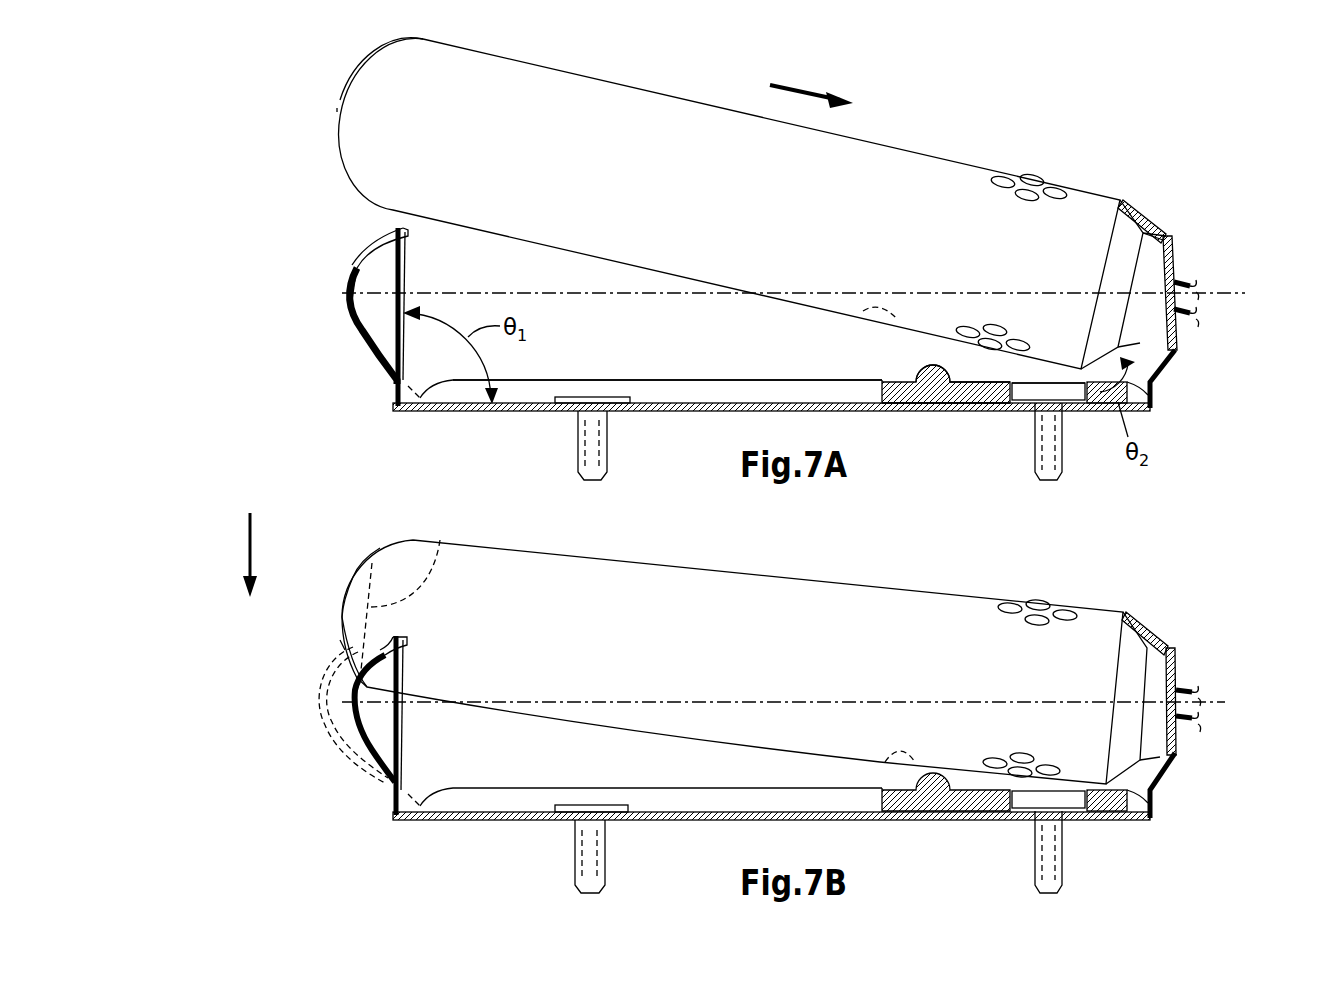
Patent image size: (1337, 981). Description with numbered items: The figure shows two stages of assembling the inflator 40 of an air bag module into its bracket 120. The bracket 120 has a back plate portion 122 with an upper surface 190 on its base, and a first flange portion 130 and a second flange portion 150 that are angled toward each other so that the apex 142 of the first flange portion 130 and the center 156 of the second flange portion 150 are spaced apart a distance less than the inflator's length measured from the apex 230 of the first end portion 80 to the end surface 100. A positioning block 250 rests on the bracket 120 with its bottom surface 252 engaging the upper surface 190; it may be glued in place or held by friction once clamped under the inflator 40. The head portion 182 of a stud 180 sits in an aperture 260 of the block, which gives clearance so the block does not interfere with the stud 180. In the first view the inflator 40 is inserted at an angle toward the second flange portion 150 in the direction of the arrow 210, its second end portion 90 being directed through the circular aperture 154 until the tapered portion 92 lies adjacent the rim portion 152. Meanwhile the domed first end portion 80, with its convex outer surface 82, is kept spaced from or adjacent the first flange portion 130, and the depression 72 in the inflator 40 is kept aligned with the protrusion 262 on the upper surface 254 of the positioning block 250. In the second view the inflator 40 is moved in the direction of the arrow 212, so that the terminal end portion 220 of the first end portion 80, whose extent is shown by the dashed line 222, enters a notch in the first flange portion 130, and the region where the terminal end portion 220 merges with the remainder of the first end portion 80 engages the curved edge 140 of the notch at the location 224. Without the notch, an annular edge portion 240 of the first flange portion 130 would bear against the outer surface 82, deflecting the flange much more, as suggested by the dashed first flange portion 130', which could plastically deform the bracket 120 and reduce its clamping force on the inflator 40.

In FIG. 7A, the inflator 40 is at (882, 132).
In FIG. 7B, the inflator 40 is at (826, 572).
In FIG. 7A, the depression 72 is at (880, 322).
In FIG. 7A, the first end portion 80 is at (373, 117).
In FIG. 7B, the first end portion 80 is at (390, 570).
In FIG. 7B, the domed outer surface 82 is at (335, 588).
In FIG. 7A, the second end portion 90 is at (1093, 273).
In FIG. 7B, the second end portion 90 is at (1108, 658).
In FIG. 7A, the tapered portion 92 is at (1131, 207).
In FIG. 7B, the tapered portion 92 is at (1133, 618).
In FIG. 7A, the end surface 100 is at (1155, 248).
In FIG. 7A, the bracket 120 is at (771, 355).
In FIG. 7B, the bracket 120 is at (724, 832).
In FIG. 7A, the back plate portion 122 is at (857, 410).
In FIG. 7A, the first flange portion 130 is at (364, 306).
In FIG. 7B, the first flange portion 130 is at (339, 709).
In FIG. 7B, the first flange portion in deflected position 130' is at (317, 715).
In FIG. 7B, the curved edge 140 is at (343, 683).
In FIG. 7A, the apex 142 is at (353, 295).
In FIG. 7A, the second flange portion 150 is at (1150, 218).
In FIG. 7B, the second flange portion 150 is at (1152, 628).
In FIG. 7A, the rim portion 152 is at (1157, 228).
In FIG. 7A, the circular aperture 154 is at (1195, 335).
In FIG. 7A, the center 156 is at (1180, 297).
In FIG. 7A, the stud 180 is at (1050, 455).
In FIG. 7A, the head portion 182 is at (1058, 390).
In FIG. 7A, the upper surface 190 is at (758, 392).
In FIG. 7A, the arrow indicating insertion direction 210 is at (793, 83).
In FIG. 7B, the arrow indicating movement direction 212 is at (248, 540).
In FIG. 7B, the terminal end portion 220 is at (355, 593).
In FIG. 7B, the dashed line 222 is at (440, 540).
In FIG. 7B, the engagement location 224 is at (380, 676).
In FIG. 7A, the apex 230 is at (339, 100).
In FIG. 7B, the annular edge portion 240 is at (337, 647).
In FIG. 7A, the positioning block 250 is at (957, 402).
In FIG. 7A, the bottom surface 252 is at (984, 415).
In FIG. 7A, the upper surface 254 is at (985, 370).
In FIG. 7A, the aperture 260 is at (1095, 392).
In FIG. 7A, the protrusion 262 is at (933, 368).